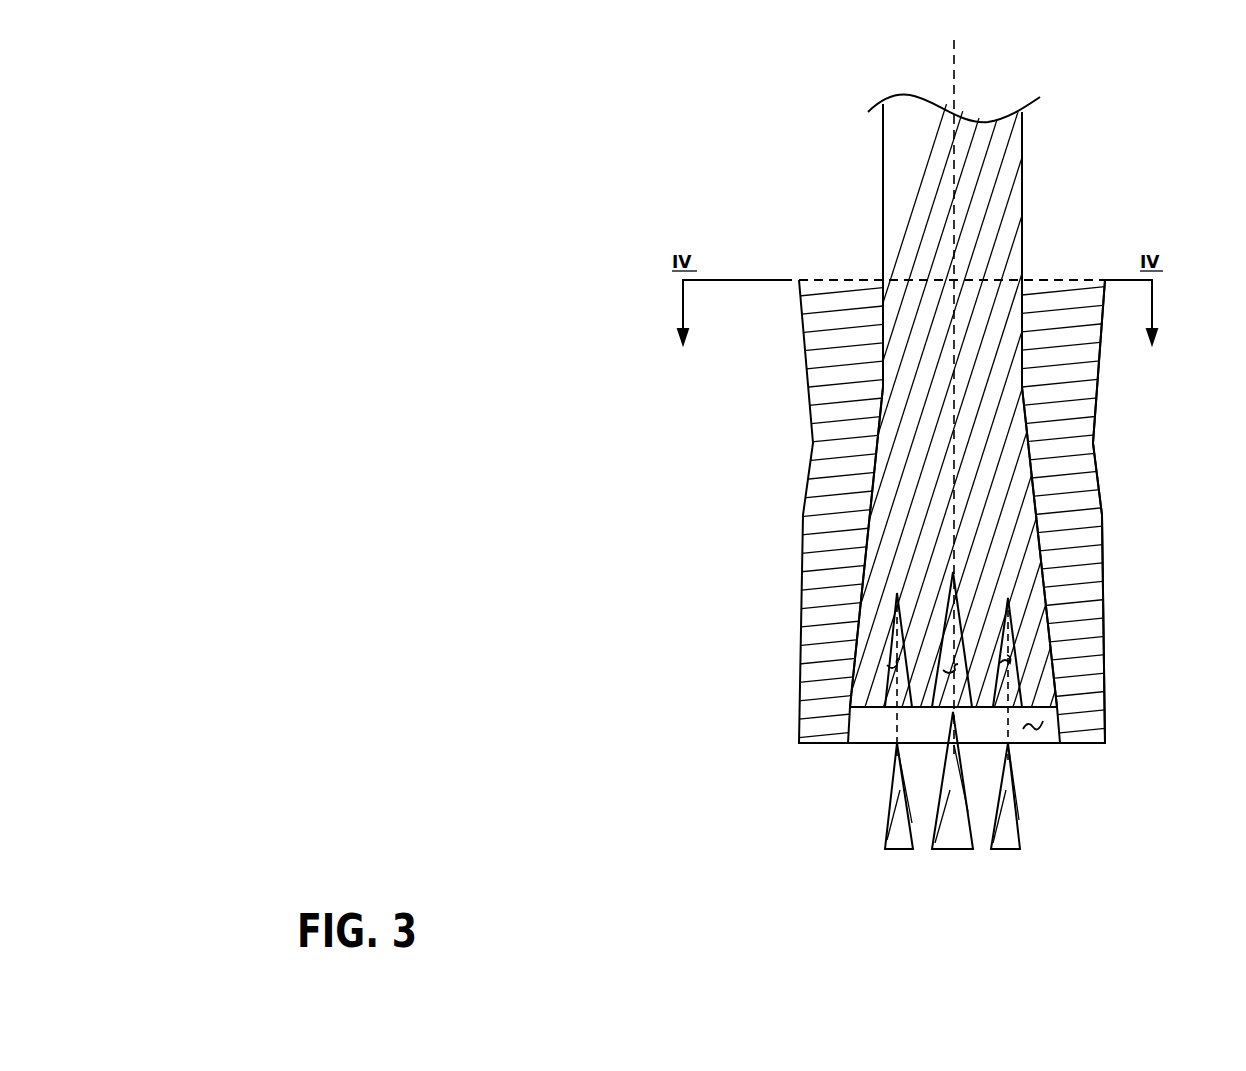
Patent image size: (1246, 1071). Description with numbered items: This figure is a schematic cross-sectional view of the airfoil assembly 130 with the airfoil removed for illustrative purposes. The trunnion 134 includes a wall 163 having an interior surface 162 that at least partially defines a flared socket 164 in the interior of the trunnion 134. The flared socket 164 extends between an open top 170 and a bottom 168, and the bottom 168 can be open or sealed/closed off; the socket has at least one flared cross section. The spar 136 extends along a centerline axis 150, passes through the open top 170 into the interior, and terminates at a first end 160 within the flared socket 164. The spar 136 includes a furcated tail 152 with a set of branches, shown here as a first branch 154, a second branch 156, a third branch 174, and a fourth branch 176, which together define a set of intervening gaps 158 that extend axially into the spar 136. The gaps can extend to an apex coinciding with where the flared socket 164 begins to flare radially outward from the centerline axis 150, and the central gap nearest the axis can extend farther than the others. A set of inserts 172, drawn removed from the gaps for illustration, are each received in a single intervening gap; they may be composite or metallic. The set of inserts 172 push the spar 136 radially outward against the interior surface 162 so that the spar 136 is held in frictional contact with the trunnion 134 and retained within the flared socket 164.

The airfoil assembly 130 is at (612, 119).
The trunnion 134 is at (1103, 439).
The spar 136 is at (1038, 240).
The centerline axis 150 is at (957, 70).
The furcated tail 152 is at (1052, 596).
The first branch 154 is at (1048, 640).
The second branch 156 is at (851, 672).
The set of intervening gaps 158 is at (953, 668).
The first end 160 is at (888, 707).
The interior surface 162 is at (870, 508).
The wall 163 is at (1097, 397).
The flared socket 164 is at (1032, 733).
The bottom 168 is at (1020, 745).
The open top 170 is at (928, 280).
The set of inserts 172 is at (1007, 851).
The third branch 174 is at (925, 707).
The fourth branch 176 is at (975, 707).